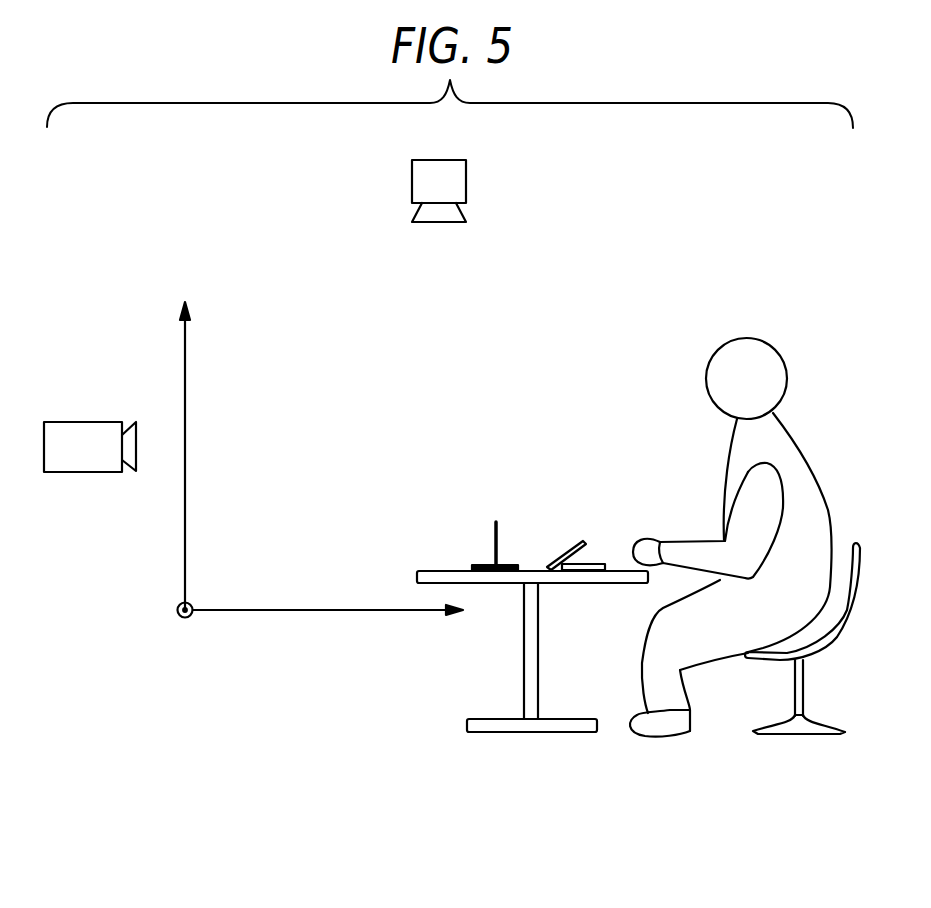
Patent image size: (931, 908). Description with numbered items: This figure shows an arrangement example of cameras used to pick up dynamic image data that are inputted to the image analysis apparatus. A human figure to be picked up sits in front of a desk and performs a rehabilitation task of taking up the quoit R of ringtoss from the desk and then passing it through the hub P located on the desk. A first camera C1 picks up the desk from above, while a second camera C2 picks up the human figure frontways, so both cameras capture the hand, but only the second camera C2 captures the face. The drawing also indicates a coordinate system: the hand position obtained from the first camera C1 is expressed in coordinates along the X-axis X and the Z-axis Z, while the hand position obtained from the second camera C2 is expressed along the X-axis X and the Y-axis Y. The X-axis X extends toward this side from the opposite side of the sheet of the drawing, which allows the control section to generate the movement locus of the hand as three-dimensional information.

The first camera C1 is at (488, 180).
The second camera C2 is at (87, 507).
The hub P is at (497, 490).
The quoit R is at (581, 508).
The X-axis X is at (185, 628).
The Y-axis Y is at (183, 440).
The Z-axis Z is at (340, 612).